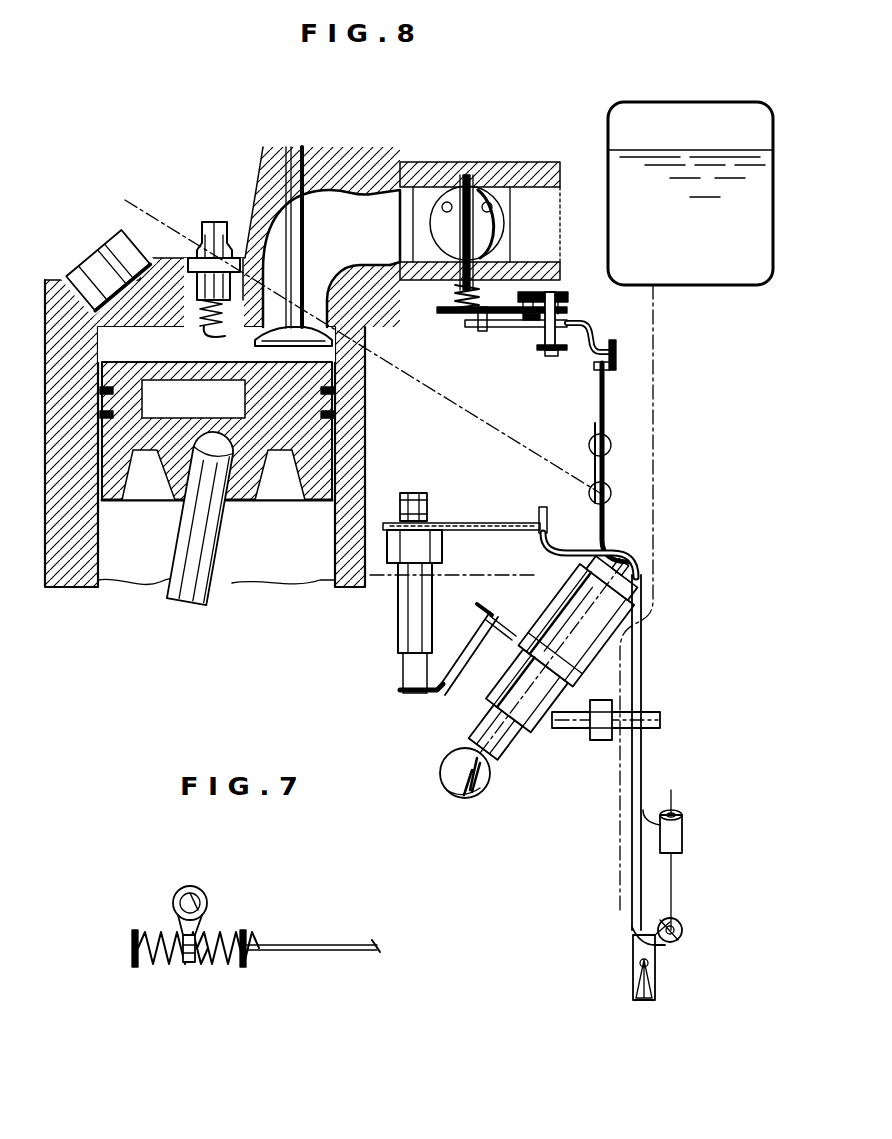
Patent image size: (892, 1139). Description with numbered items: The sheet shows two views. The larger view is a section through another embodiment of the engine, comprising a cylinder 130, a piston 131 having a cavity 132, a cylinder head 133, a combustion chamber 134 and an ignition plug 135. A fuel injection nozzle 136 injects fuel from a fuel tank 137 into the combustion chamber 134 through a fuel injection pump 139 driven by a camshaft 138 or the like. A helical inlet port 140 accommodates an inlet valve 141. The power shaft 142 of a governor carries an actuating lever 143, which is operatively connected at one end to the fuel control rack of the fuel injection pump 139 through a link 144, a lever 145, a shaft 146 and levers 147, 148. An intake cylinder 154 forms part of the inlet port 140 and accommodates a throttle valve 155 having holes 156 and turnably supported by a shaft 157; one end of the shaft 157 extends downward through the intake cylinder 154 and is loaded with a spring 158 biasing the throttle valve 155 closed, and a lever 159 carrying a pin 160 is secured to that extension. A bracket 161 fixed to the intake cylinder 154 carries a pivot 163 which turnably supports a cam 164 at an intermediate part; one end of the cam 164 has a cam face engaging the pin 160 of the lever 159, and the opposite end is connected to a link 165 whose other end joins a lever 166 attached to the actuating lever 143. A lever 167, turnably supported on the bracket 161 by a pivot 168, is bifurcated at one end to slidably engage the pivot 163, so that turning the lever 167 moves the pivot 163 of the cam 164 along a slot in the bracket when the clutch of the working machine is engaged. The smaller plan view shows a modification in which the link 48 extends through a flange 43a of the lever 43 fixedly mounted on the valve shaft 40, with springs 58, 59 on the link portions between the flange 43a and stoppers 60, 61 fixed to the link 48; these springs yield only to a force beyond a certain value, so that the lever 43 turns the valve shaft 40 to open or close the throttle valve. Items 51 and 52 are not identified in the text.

In FIG. 8, the cylinder 130 is at (90, 520).
In FIG. 8, the piston 131 is at (120, 440).
In FIG. 8, the cavity 132 is at (170, 400).
In FIG. 8, the cylinder head 133 is at (165, 258).
In FIG. 8, the combustion chamber 134 is at (112, 346).
In FIG. 8, the ignition plug 135 is at (210, 222).
In FIG. 8, the fuel injection nozzle 136 is at (75, 262).
In FIG. 8, the fuel tank 137 is at (648, 122).
In FIG. 8, the camshaft 138 is at (460, 798).
In FIG. 8, the fuel injection pump 139 is at (530, 735).
In FIG. 8, the helical inlet port 140 is at (336, 200).
In FIG. 8, the inlet valve 141 is at (280, 205).
In FIG. 8, the power shaft 142 is at (662, 720).
In FIG. 8, the actuating lever 143 is at (644, 605).
In FIG. 8, the link 144 is at (541, 512).
In FIG. 8, the lever 145 is at (460, 523).
In FIG. 8, the shaft 146 is at (410, 660).
In FIG. 8, the lever 147 is at (450, 695).
In FIG. 8, the lever 148 is at (505, 630).
In FIG. 8, the intake cylinder 154 is at (415, 172).
In FIG. 8, the throttle valve 155 is at (488, 165).
In FIG. 8, the holes 156 is at (446, 203).
In FIG. 8, the shaft 157 is at (468, 178).
In FIG. 8, the spring 158 is at (458, 300).
In FIG. 8, the lever 159 is at (462, 315).
In FIG. 8, the pin 160 is at (480, 330).
In FIG. 8, the bracket 161 is at (568, 296).
In FIG. 8, the pivot 163 is at (551, 356).
In FIG. 8, the cam 164 is at (600, 345).
In FIG. 8, the link 165 is at (618, 360).
In FIG. 8, the lever 166 is at (608, 410).
In FIG. 8, the lever 167 is at (500, 328).
In FIG. 8, the pivot 168 is at (528, 322).
In FIG. 7, the valve shaft 40 is at (185, 905).
In FIG. 7, the lever 43 is at (205, 893).
In FIG. 7, the flange 43a is at (190, 963).
In FIG. 7, the link 48 is at (320, 945).
In FIG. 8, the pivot 51 is at (680, 927).
In FIG. 8, the knob 52 is at (674, 870).
In FIG. 7, the spring 58 is at (150, 965).
In FIG. 7, the spring 59 is at (222, 965).
In FIG. 7, the stopper 60 is at (132, 935).
In FIG. 7, the stopper 61 is at (246, 933).